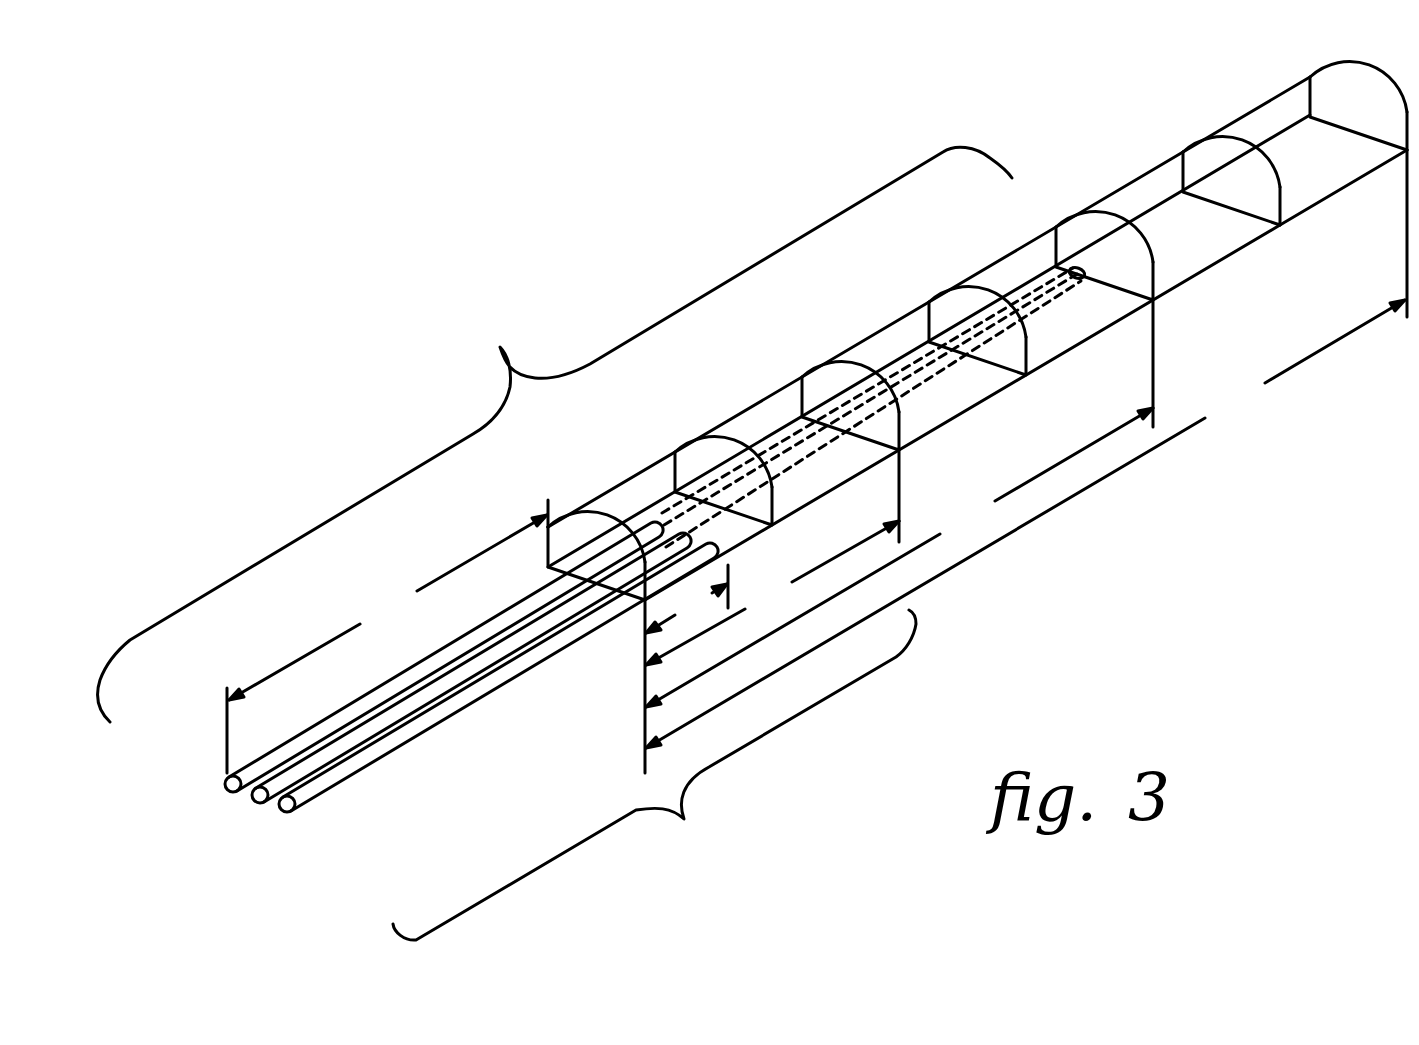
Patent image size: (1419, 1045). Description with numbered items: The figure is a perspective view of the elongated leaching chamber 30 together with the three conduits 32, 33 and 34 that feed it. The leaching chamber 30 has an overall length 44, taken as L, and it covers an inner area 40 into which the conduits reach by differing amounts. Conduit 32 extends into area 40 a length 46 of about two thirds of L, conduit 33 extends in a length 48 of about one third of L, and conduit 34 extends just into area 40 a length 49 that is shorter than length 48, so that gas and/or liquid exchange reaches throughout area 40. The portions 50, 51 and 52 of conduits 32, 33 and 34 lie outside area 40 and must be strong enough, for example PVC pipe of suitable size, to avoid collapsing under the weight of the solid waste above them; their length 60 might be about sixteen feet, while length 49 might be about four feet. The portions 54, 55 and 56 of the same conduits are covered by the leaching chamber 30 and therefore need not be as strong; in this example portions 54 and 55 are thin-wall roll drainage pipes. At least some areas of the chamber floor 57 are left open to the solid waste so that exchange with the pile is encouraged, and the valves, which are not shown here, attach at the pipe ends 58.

The elongated leaching chamber 30 is at (1150, 168).
The conduit 32 is at (555, 434).
The conduit 33 is at (654, 775).
The conduit 34 is at (473, 689).
The area 40 is at (597, 565).
The length 44 is at (1026, 461).
The length 46 is at (899, 503).
The length 48 is at (772, 557).
The length 49 is at (686, 608).
The conduit portion 50 is at (388, 710).
The conduit portion 51 is at (453, 693).
The conduit portion 52 is at (525, 682).
The conduit portion 54 is at (900, 372).
The conduit portion 55 is at (787, 467).
The conduit portion 56 is at (702, 570).
The chamber floor 57 is at (1217, 237).
The pipe ends 58 is at (280, 810).
The length 60 is at (387, 636).